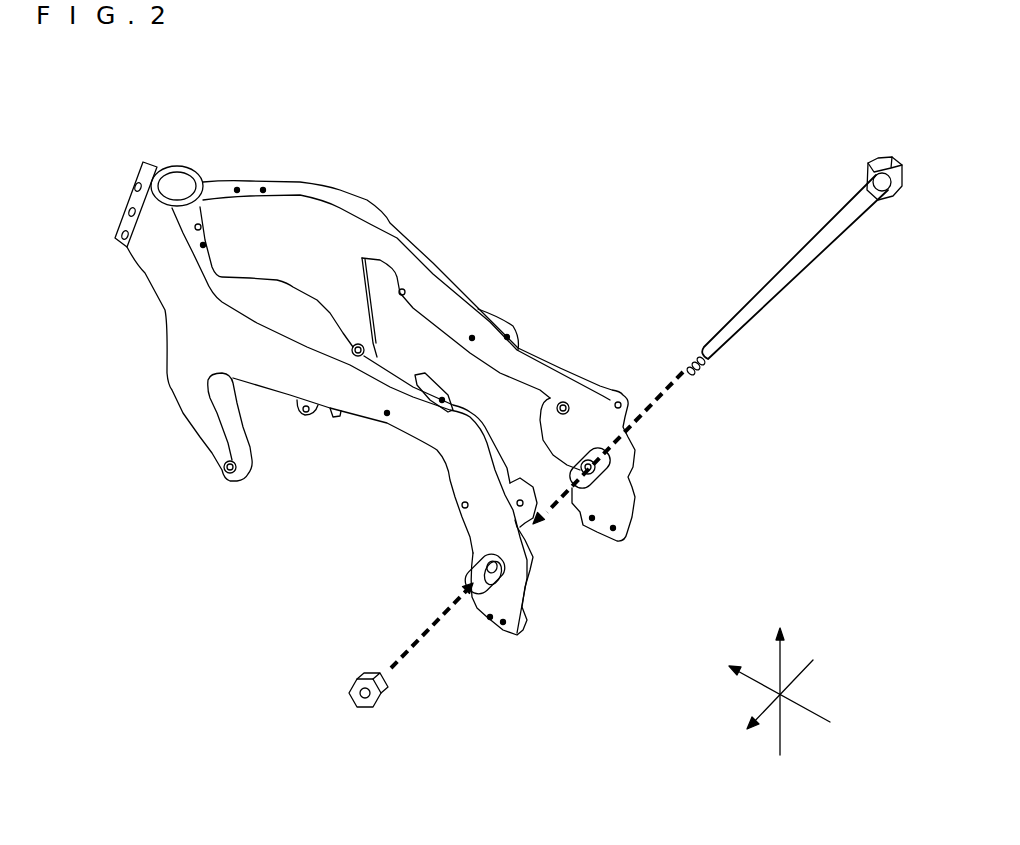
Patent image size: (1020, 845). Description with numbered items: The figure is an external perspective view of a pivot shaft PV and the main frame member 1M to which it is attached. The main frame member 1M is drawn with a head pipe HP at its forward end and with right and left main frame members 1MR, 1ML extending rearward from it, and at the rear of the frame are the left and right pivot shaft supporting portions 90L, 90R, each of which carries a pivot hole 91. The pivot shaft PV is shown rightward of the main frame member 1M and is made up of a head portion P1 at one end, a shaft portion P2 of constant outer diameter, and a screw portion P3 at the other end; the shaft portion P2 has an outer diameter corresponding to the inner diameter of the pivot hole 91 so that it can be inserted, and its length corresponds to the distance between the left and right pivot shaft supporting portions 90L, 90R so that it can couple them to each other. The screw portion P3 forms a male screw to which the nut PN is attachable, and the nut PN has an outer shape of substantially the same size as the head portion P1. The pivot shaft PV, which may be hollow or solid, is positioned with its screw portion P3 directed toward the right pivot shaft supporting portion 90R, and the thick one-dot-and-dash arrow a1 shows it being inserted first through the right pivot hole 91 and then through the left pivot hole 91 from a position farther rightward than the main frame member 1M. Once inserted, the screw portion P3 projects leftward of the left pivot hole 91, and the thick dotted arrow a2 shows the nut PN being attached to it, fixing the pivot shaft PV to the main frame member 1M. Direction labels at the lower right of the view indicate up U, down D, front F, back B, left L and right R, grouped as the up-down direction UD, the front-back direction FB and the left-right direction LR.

The main frame member 1M is at (500, 190).
The right frame member 1MR is at (327, 190).
The left frame member 1ML is at (185, 347).
The head pipe HP is at (173, 182).
The pivot hole 91 is at (551, 392).
The right pivot shaft supporting portion 90R is at (597, 470).
The left pivot shaft supporting portion 90L is at (498, 575).
The thick one-dot and dash arrow a1 is at (650, 388).
The thick dotted arrow a2 is at (402, 650).
The nut PN is at (388, 687).
The pivot shaft PV is at (752, 460).
The head portion P1 is at (890, 197).
The shaft portion P2 is at (773, 290).
The screw portion P3 is at (703, 363).
The up direction U is at (784, 677).
The down direction D is at (783, 778).
The front direction F is at (769, 684).
The back direction B is at (852, 738).
The left direction L is at (732, 744).
The right direction R is at (792, 681).
The up-down direction UD is at (780, 668).
The left-right direction LR is at (800, 677).
The front-back direction FB is at (797, 707).